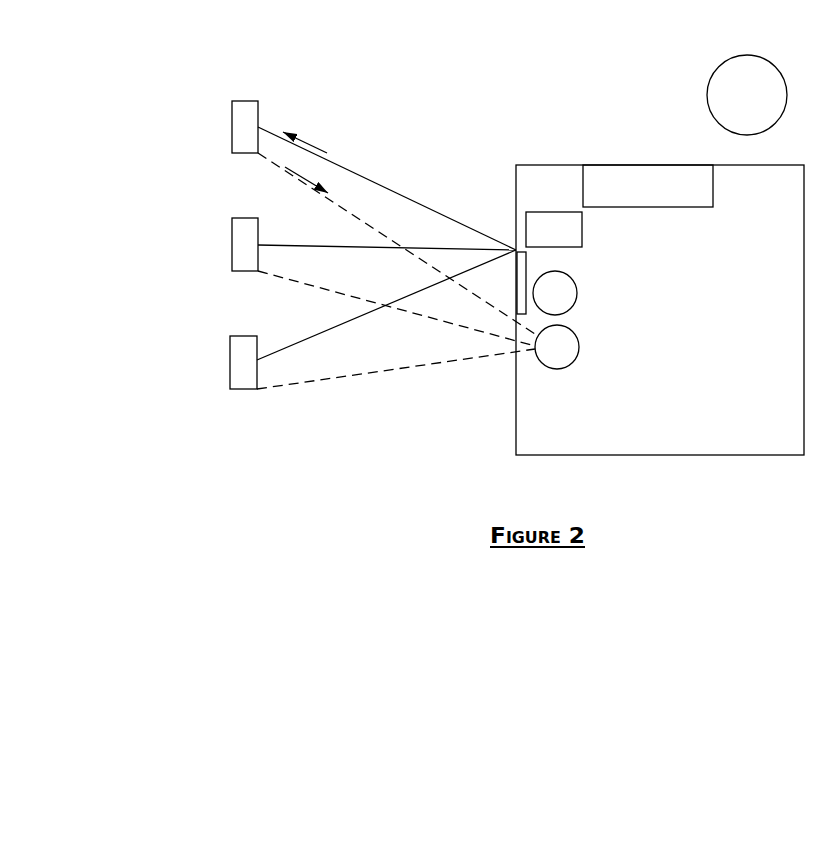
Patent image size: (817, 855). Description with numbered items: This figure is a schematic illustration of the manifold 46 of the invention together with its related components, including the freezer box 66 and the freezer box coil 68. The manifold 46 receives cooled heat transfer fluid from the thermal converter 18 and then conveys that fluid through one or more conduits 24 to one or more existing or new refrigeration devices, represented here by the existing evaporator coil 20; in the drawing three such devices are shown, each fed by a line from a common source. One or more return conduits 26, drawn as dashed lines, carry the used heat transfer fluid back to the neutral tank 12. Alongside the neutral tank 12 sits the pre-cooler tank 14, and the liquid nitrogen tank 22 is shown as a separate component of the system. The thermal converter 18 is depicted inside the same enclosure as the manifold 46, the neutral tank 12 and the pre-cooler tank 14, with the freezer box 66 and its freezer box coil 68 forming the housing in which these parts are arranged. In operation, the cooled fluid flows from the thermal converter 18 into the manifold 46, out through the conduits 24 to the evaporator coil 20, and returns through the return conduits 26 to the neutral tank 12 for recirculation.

The neutral tank 12 is at (580, 362).
The pre-cooler tank 14 is at (578, 304).
The thermal converter 18 is at (583, 229).
The existing evaporator coil 20 is at (232, 130).
The liquid nitrogen tank 22 is at (707, 107).
The conduit 24 is at (357, 172).
The return conduit 26 is at (362, 222).
The manifold 46 is at (527, 262).
The freezer box 66 is at (516, 420).
The freezer box coil 68 is at (700, 190).